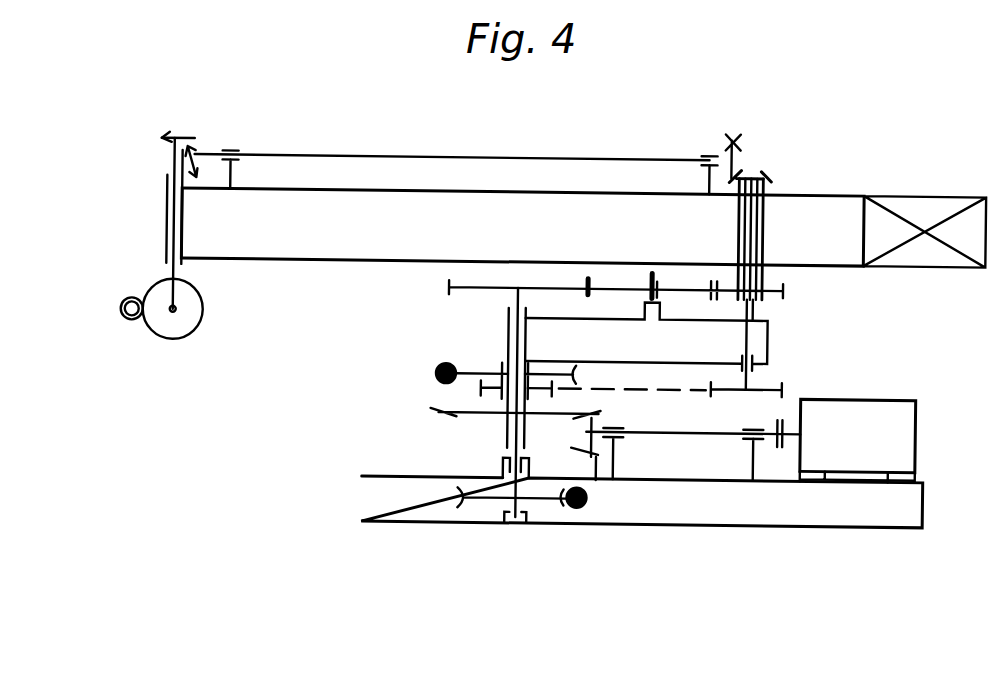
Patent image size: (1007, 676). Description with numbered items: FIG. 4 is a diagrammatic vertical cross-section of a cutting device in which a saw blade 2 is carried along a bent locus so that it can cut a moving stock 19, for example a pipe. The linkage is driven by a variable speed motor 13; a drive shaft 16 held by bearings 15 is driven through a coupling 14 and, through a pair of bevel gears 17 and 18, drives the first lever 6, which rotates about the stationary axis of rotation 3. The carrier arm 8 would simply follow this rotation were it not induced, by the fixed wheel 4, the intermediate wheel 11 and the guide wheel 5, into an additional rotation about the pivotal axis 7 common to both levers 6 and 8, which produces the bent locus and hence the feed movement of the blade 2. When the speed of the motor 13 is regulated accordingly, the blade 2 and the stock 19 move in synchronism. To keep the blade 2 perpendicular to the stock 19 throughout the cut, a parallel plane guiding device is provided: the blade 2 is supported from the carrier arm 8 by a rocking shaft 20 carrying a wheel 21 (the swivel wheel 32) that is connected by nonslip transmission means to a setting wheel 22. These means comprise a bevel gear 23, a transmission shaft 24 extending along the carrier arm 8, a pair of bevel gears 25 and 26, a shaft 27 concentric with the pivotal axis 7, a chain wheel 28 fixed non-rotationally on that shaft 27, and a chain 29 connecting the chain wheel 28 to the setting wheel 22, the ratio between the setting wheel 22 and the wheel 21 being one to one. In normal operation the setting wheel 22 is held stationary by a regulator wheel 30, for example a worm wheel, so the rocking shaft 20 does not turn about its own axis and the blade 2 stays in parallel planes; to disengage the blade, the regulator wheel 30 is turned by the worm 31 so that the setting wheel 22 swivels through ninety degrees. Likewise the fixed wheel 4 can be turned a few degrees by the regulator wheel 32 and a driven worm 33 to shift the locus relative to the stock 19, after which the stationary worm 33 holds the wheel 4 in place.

The saw blade 2 is at (187, 329).
The stationary axis of rotation 3 is at (510, 433).
The fixed wheel 4 is at (470, 291).
The guide wheel 5 is at (785, 290).
The first lever 6 is at (772, 344).
The pivotal axis 7 is at (755, 255).
The carrier arm 8 is at (340, 260).
The intermediate wheel 11 is at (607, 287).
The variable speed motor 13 is at (897, 446).
The coupling 14 is at (781, 446).
The bearings 15 is at (748, 442).
The drive shaft 16 is at (692, 435).
The bevel gear 17 is at (596, 457).
The bevel gear 18 is at (440, 414).
The stock 19 is at (126, 323).
The rocking shaft 20 is at (171, 222).
The wheel 21 is at (158, 137).
The setting wheel 22 is at (480, 390).
The bevel gear 23 is at (193, 150).
The transmission shaft 24 is at (425, 158).
The bevel gear 25 is at (735, 138).
The bevel gear 26 is at (772, 176).
The shaft 27 is at (752, 235).
The chain wheel 28 is at (775, 386).
The chain 29 is at (656, 390).
The regulator wheel 30 is at (475, 373).
The worm 31 is at (436, 373).
The regulator wheel 32 is at (487, 500).
The worm 33 is at (575, 508).